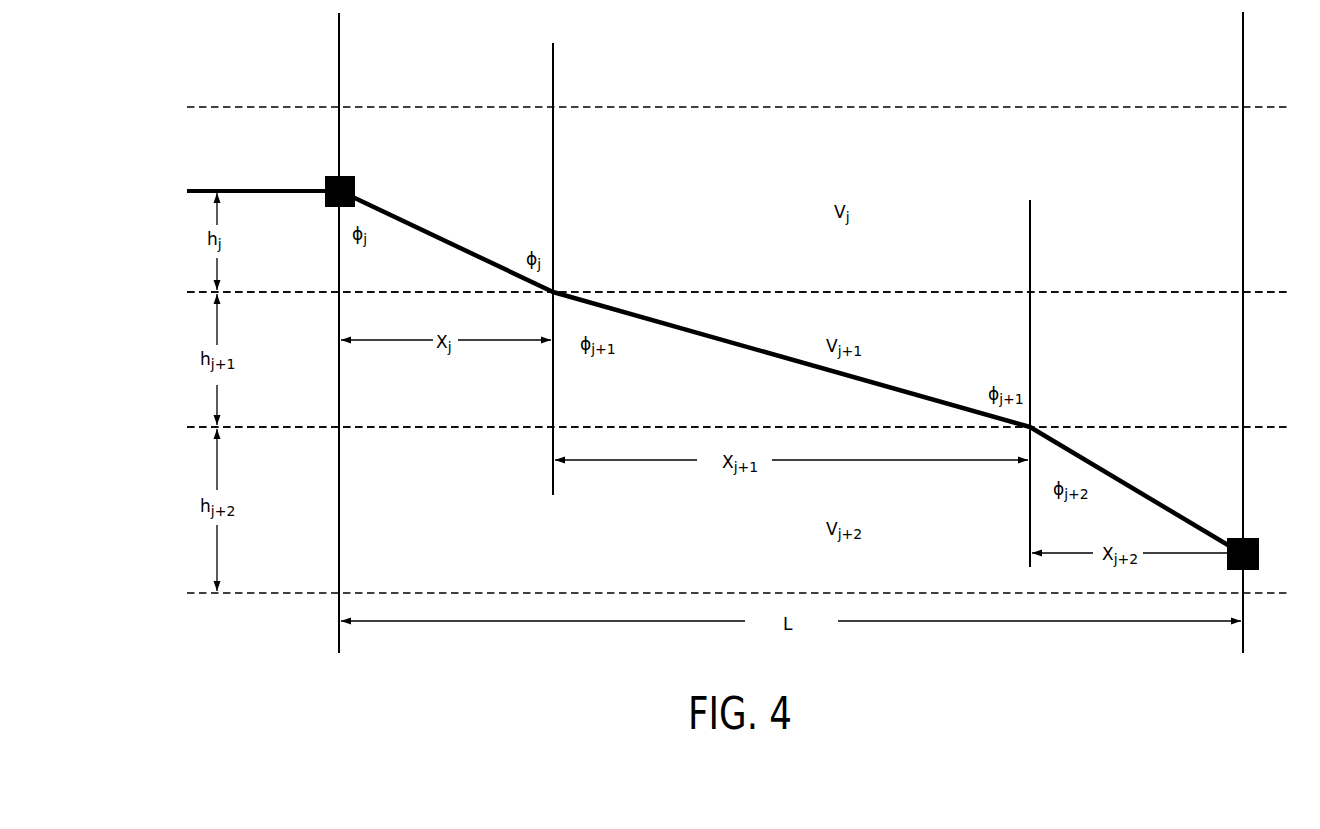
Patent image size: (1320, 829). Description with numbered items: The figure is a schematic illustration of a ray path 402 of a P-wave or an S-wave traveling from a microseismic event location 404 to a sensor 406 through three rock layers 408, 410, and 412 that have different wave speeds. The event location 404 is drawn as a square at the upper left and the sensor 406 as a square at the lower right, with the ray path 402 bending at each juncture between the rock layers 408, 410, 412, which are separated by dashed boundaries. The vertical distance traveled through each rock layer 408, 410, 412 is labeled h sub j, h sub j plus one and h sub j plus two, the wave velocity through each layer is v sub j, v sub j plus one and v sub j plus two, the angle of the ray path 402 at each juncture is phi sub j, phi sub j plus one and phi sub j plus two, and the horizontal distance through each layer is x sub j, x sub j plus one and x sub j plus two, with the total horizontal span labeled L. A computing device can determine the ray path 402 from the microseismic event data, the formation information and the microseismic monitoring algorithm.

The ray path 402 is at (487, 262).
The microseismic event location 404 is at (318, 171).
The sensor 406 is at (1228, 535).
The rock layer 408 is at (754, 219).
The rock layer 410 is at (752, 400).
The rock layer 412 is at (752, 544).